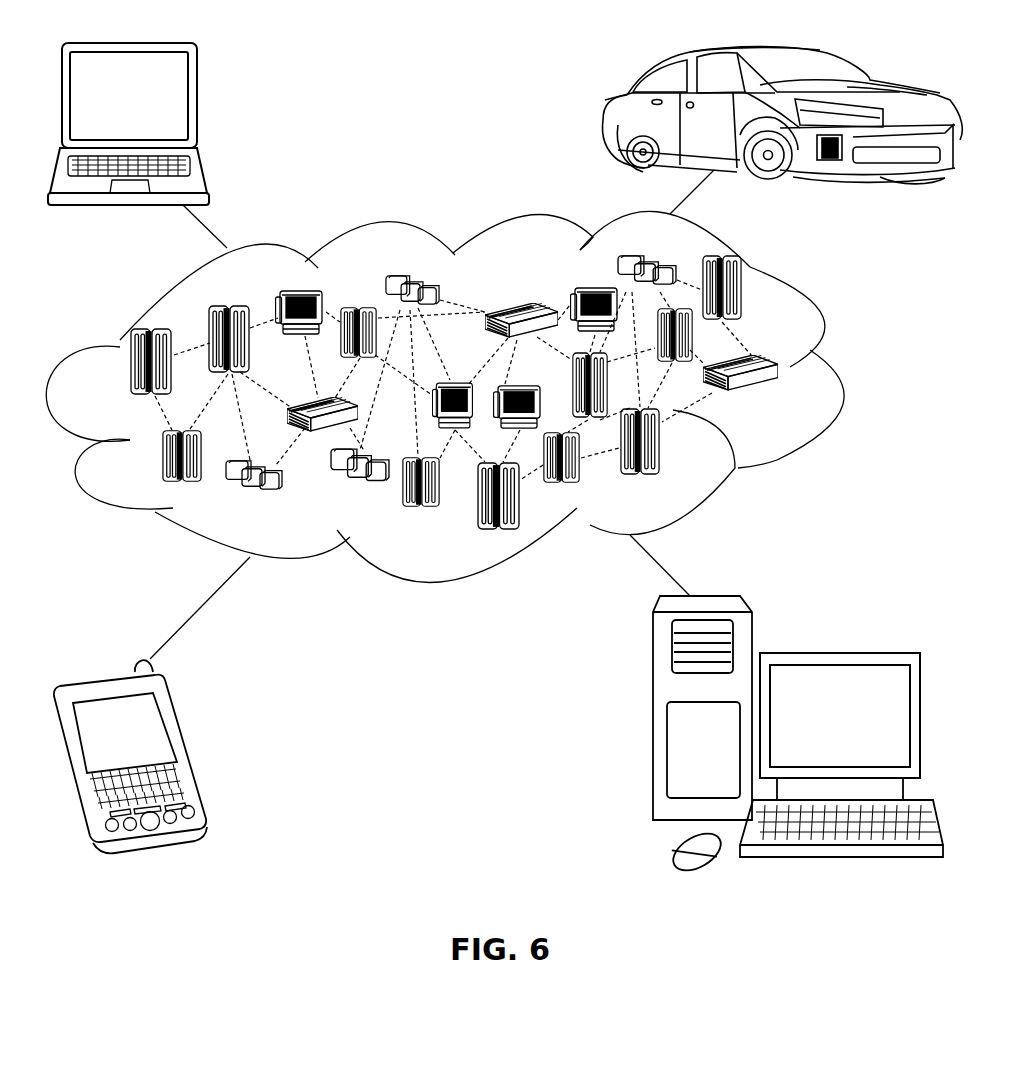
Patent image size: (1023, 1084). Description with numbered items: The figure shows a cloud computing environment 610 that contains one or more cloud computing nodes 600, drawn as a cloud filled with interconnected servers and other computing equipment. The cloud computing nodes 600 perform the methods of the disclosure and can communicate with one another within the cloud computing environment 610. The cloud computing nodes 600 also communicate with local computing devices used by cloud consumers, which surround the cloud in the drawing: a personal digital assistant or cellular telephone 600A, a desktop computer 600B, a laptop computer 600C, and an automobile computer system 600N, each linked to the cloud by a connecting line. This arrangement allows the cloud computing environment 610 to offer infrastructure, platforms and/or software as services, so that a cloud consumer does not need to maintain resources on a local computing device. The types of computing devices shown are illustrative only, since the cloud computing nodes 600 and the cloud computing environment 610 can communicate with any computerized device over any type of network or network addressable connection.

The cloud computing nodes 600 is at (483, 396).
The cloud computing environment 610 is at (837, 373).
The personal digital assistant or cellular telephone 600A is at (183, 748).
The desktop computer 600B is at (837, 653).
The laptop computer 600C is at (197, 102).
The automobile computer system 600N is at (623, 122).